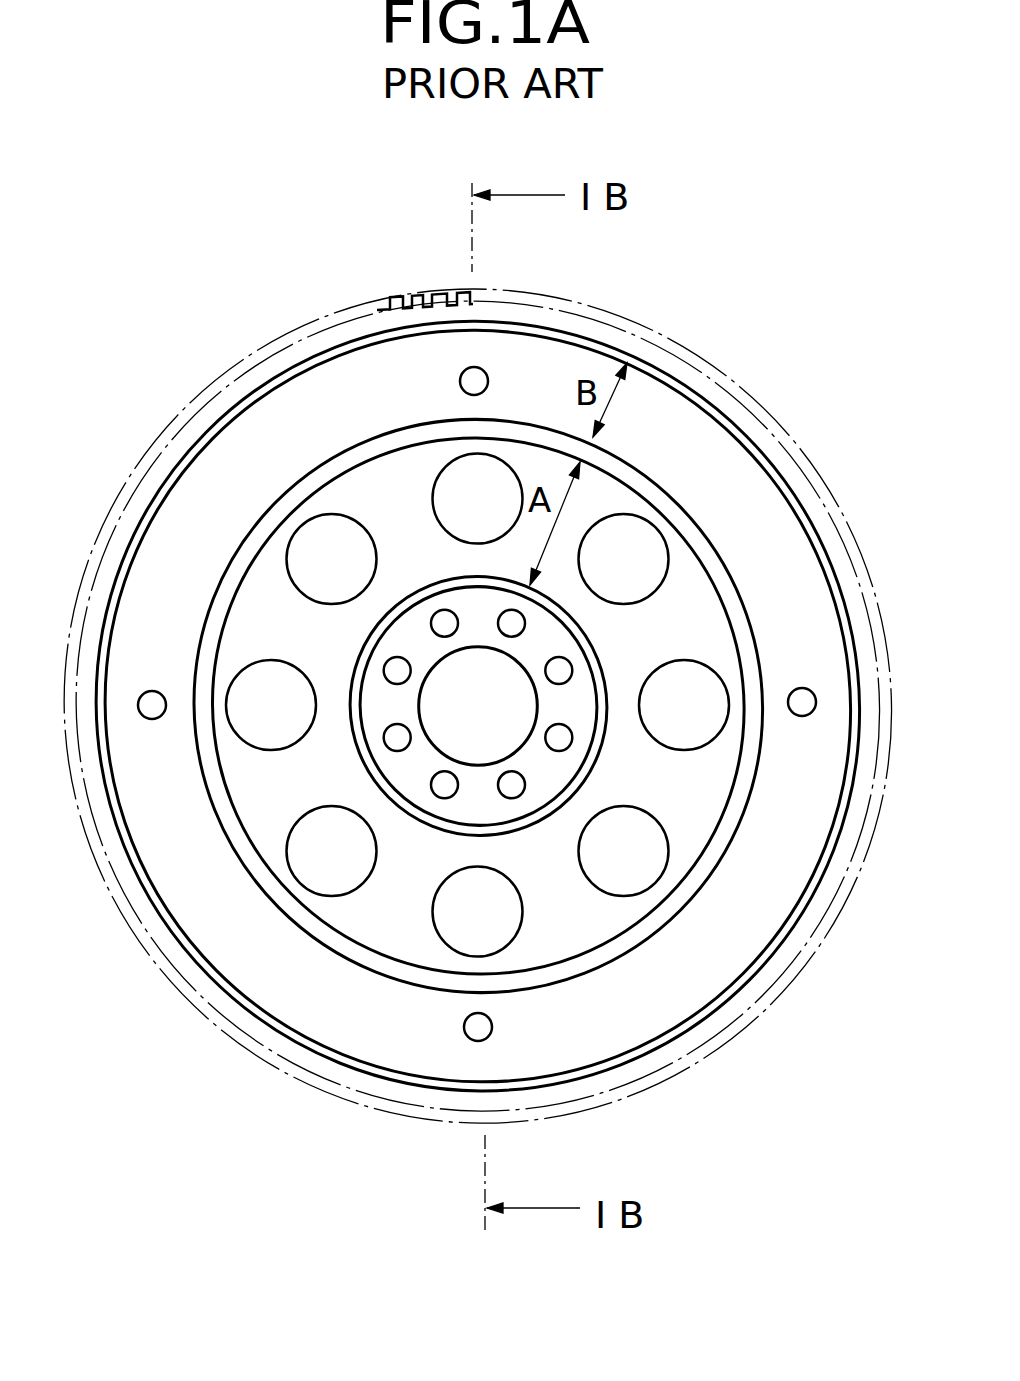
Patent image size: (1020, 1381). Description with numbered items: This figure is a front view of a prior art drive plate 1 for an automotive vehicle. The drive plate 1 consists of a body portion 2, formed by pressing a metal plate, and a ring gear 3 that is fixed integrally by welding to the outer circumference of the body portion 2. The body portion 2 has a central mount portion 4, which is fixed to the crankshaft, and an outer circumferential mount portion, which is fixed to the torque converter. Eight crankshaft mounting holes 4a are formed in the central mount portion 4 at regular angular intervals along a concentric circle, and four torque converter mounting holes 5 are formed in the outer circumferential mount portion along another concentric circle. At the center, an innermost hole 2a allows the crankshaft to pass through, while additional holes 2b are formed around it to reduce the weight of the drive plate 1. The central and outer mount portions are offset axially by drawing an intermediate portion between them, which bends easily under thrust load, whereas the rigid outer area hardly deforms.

The drive plate 1 is at (106, 256).
The body portion 2 is at (723, 468).
The innermost hole 2a is at (427, 727).
The additional holes 2b is at (438, 933).
The ring gear 3 is at (711, 362).
The central mount portion 4 is at (550, 642).
The crankshaft mounting holes 4a is at (569, 670).
The torque converter mounting holes 5 is at (482, 368).